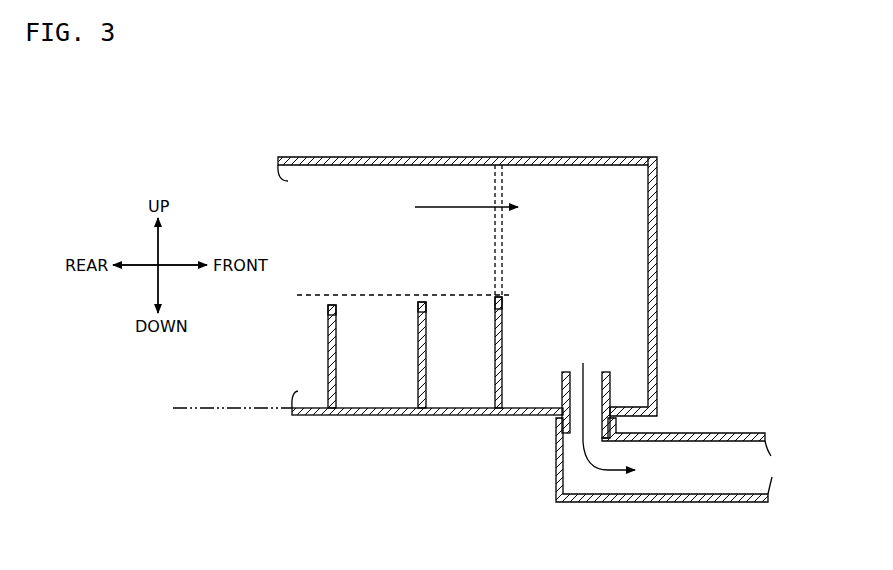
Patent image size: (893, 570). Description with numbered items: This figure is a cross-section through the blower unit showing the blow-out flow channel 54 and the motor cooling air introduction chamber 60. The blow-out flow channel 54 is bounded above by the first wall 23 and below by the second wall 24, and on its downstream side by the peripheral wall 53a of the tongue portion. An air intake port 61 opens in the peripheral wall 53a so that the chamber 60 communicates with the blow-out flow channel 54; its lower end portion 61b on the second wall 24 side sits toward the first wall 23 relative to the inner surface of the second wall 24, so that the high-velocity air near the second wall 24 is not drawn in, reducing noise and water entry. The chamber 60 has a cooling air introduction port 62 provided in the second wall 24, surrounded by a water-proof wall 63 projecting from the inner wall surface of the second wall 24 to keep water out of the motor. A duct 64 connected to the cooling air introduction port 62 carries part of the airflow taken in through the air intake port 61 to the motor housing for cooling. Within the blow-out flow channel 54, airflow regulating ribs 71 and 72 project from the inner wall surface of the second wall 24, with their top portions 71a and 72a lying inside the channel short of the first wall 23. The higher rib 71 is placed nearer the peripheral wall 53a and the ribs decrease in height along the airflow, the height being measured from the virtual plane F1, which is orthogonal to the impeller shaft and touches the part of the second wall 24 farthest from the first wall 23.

The first wall 23 is at (330, 157).
The second wall 24 is at (298, 416).
The blow-out flow channel 54 is at (362, 216).
The motor cooling air introduction chamber 60 is at (580, 277).
The air intake port 61 is at (495, 183).
The end portion of the air intake port 61b is at (497, 297).
The cooling air introduction port 62 is at (612, 395).
The water-proof wall 63 is at (607, 372).
The duct 64 is at (689, 479).
The airflow regulating rib 71 is at (418, 386).
The top portion of airflow regulating rib 71a is at (422, 302).
The airflow regulating rib 72 is at (329, 388).
The top portion of airflow regulating rib 72a is at (333, 305).
The peripheral wall of the tongue portion 53a is at (494, 393).
The virtual plane F1 is at (240, 407).